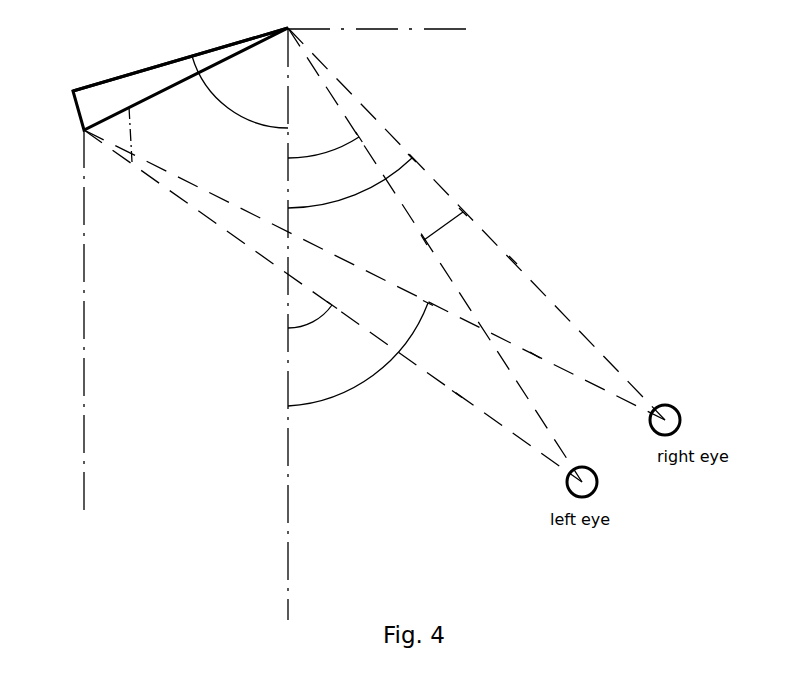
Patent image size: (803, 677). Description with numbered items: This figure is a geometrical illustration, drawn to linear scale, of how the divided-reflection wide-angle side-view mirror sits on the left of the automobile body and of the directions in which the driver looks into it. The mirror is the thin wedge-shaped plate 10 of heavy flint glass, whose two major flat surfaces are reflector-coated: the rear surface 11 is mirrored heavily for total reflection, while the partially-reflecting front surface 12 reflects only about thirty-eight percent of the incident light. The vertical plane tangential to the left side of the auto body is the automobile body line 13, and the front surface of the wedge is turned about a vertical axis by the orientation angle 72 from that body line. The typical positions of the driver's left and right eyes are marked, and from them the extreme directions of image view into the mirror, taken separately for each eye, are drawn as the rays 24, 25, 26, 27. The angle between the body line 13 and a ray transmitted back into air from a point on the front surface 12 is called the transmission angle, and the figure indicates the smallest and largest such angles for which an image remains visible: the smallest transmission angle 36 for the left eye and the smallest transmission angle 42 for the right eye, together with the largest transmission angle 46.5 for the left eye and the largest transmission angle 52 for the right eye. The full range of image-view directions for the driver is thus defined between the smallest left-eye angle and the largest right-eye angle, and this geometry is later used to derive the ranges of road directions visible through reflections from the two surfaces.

The wedge-shaped plate 10 is at (102, 98).
The rear surface 11 is at (170, 61).
The front surface 12 is at (131, 160).
The automobile body line 13 is at (290, 546).
The extreme direction of image view 24 is at (463, 212).
The extreme direction of image view 25 is at (513, 260).
The extreme direction of image view 26 is at (535, 355).
The extreme direction of image view 27 is at (457, 394).
The smallest transmission angle for the left eye 36 is at (330, 150).
The smallest transmission angle for the right eye 42 is at (353, 197).
The largest transmission angle for the left eye 46.5 is at (316, 320).
The largest transmission angle for the right eye 52 is at (367, 381).
The orientation angle of the front surface 72 is at (240, 113).